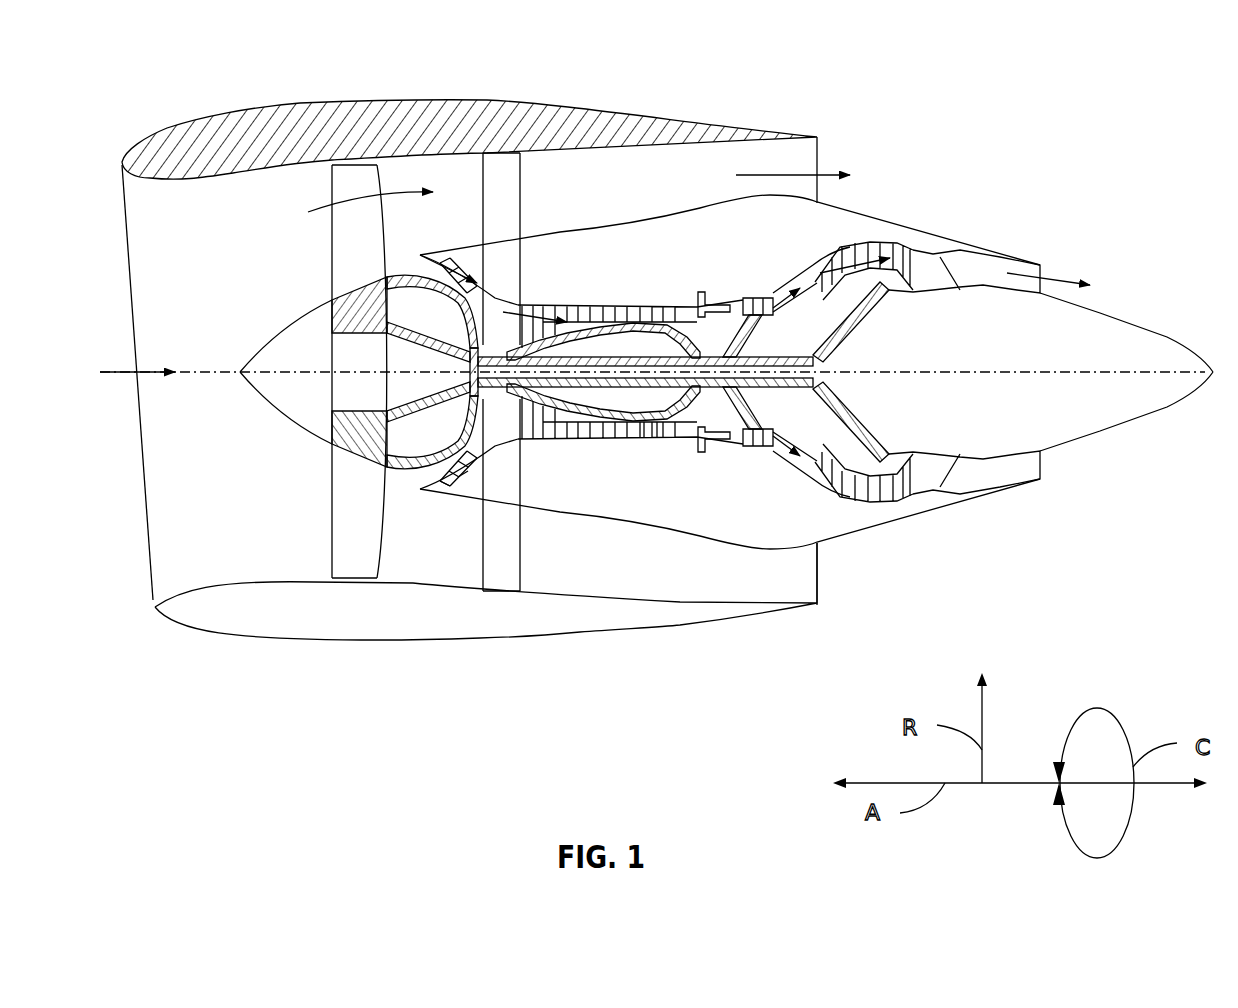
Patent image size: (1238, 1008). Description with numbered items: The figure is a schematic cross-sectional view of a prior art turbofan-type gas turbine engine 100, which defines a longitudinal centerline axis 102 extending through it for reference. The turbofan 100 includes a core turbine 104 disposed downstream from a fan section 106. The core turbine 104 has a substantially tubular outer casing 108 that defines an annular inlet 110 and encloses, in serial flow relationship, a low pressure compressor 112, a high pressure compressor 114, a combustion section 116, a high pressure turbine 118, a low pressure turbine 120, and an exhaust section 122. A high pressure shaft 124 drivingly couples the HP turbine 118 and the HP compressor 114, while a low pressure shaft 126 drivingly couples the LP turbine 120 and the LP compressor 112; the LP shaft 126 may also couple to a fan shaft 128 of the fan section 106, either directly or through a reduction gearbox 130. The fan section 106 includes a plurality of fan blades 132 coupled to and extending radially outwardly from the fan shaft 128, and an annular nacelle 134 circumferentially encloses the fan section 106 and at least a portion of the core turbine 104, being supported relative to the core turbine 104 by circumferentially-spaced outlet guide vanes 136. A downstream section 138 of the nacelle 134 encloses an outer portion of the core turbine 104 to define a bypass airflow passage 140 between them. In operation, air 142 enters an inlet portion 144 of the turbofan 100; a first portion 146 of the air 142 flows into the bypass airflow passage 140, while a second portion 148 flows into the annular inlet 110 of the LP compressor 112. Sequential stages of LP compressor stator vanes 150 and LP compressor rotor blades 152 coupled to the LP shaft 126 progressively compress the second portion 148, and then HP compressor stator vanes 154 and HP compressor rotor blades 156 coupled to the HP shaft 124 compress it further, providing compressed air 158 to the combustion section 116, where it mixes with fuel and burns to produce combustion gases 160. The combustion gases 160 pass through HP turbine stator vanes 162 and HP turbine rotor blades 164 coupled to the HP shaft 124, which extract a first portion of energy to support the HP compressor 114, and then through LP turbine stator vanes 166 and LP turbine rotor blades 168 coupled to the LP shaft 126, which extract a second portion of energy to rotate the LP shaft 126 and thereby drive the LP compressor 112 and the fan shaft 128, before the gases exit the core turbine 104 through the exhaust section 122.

The turbofan-type gas turbine engine 100 is at (957, 105).
The longitudinal centerline axis 102 is at (967, 370).
The core turbine 104 is at (647, 247).
The fan section 106 is at (250, 233).
The outer casing 108 is at (667, 533).
The annular inlet 110 is at (435, 478).
The low pressure compressor 112 is at (480, 450).
The high pressure compressor 114 is at (557, 442).
The combustion section 116 is at (703, 447).
The high pressure turbine 118 is at (823, 423).
The low pressure turbine 120 is at (903, 505).
The exhaust section 122 is at (1047, 266).
The high pressure shaft 124 is at (780, 332).
The low pressure shaft 126 is at (488, 347).
The fan shaft 128 is at (383, 333).
The reduction gearbox 130 is at (493, 437).
The fan blades 132 is at (330, 507).
The nacelle 134 is at (373, 640).
The outlet guide vanes 136 is at (522, 172).
The downstream section of the nacelle 138 is at (727, 115).
The bypass airflow passage 140 is at (661, 184).
The air 142 is at (147, 372).
The inlet portion 144 is at (152, 580).
The first portion of the air 146 is at (768, 173).
The second portion of the air 148 is at (410, 254).
The LP compressor stator vanes 150 is at (440, 483).
The LP compressor rotor blades 152 is at (457, 493).
The HP compressor stator vanes 154 is at (650, 432).
The HP compressor rotor blades 156 is at (650, 428).
The compressed air 158 is at (683, 318).
The combustion gases 160 is at (760, 297).
The HP turbine stator vanes 162 is at (750, 437).
The HP turbine rotor blades 164 is at (760, 420).
The LP turbine stator vanes 166 is at (797, 250).
The LP turbine rotor blades 168 is at (833, 240).